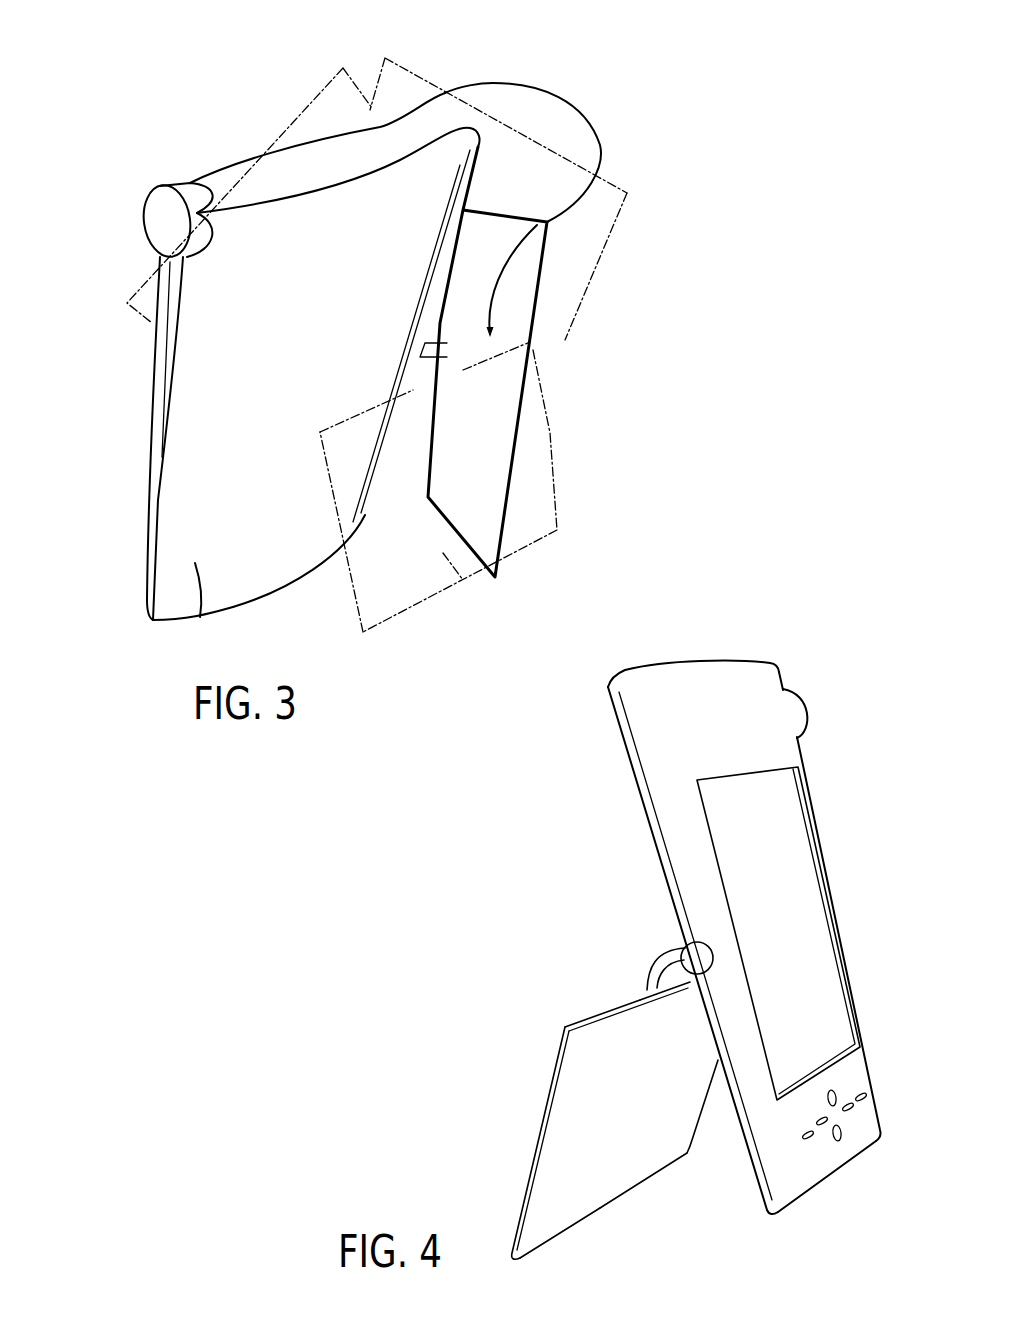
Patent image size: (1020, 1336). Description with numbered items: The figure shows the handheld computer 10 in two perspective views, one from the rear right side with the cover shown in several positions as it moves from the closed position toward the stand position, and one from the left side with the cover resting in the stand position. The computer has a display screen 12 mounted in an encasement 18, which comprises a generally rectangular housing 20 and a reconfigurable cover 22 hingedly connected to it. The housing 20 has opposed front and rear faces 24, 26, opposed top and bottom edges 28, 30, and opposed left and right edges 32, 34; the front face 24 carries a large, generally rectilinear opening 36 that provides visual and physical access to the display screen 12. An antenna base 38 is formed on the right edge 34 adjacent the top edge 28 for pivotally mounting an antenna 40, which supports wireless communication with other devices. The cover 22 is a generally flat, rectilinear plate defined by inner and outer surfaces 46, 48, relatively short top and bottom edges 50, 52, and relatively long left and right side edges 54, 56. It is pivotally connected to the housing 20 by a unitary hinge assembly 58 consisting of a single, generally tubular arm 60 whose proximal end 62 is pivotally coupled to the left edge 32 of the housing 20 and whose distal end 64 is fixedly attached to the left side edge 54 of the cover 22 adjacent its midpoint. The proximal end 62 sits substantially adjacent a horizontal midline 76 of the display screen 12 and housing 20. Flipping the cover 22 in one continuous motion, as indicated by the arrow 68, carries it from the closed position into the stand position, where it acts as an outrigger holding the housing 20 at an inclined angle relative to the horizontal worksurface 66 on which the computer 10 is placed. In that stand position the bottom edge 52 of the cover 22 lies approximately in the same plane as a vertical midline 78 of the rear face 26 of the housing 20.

In FIG. 3, the handheld computer 10 is at (441, 66).
In FIG. 4, the handheld computer 10 is at (628, 654).
In FIG. 4, the display screen 12 is at (808, 822).
In FIG. 3, the encasement 18 is at (145, 530).
In FIG. 4, the encasement 18 is at (627, 787).
In FIG. 3, the housing 20 is at (147, 452).
In FIG. 4, the housing 20 is at (641, 812).
In FIG. 3, the reconfigurable cover 22 is at (555, 530).
In FIG. 4, the reconfigurable cover 22 is at (538, 1137).
In FIG. 4, the front face 24 is at (671, 661).
In FIG. 3, the rear face 26 is at (193, 620).
In FIG. 3, the top edge 28 is at (246, 152).
In FIG. 4, the top edge 28 is at (716, 660).
In FIG. 3, the bottom edge 30 is at (233, 607).
In FIG. 4, the bottom edge 30 is at (843, 1162).
In FIG. 3, the left edge 32 is at (473, 186).
In FIG. 4, the left edge 32 is at (650, 840).
In FIG. 3, the right edge 34 is at (150, 398).
In FIG. 4, the right edge 34 is at (832, 870).
In FIG. 4, the opening 36 is at (845, 934).
In FIG. 3, the antenna base 38 is at (148, 225).
In FIG. 4, the antenna base 38 is at (806, 711).
In FIG. 3, the antenna 40 is at (155, 333).
In FIG. 4, the inner surface 46 is at (575, 1227).
In FIG. 3, the outer surface 48 is at (463, 580).
In FIG. 3, the top edge 50 is at (550, 433).
In FIG. 4, the top edge 50 is at (527, 1177).
In FIG. 3, the bottom edge 52 is at (345, 590).
In FIG. 4, the bottom edge 52 is at (703, 1110).
In FIG. 3, the left side edge 54 is at (517, 271).
In FIG. 4, the left side edge 54 is at (577, 1020).
In FIG. 3, the right side edge 56 is at (523, 543).
In FIG. 4, the right side edge 56 is at (650, 1180).
In FIG. 4, the hinge assembly 58 is at (669, 941).
In FIG. 4, the arm 60 is at (653, 970).
In FIG. 4, the proximal end 62 is at (677, 947).
In FIG. 4, the distal end 64 is at (643, 993).
In FIG. 3, the horizontal worksurface 66 is at (313, 565).
In FIG. 3, the arrow 68 is at (567, 97).
In FIG. 4, the horizontal midline 76 is at (828, 907).
In FIG. 3, the vertical midline 78 is at (293, 577).